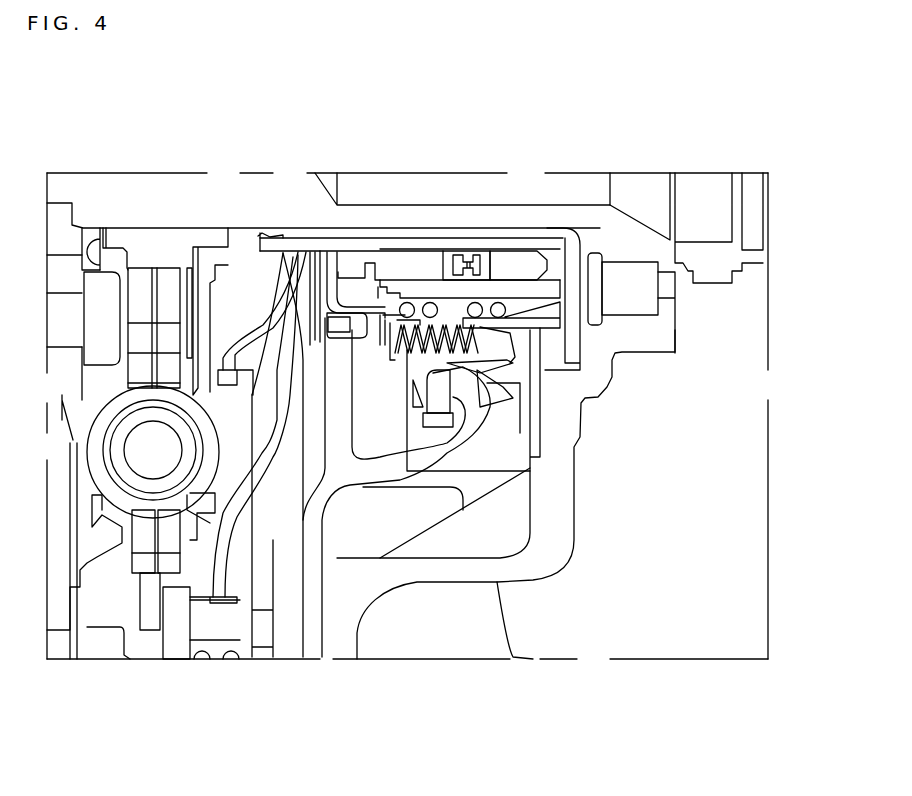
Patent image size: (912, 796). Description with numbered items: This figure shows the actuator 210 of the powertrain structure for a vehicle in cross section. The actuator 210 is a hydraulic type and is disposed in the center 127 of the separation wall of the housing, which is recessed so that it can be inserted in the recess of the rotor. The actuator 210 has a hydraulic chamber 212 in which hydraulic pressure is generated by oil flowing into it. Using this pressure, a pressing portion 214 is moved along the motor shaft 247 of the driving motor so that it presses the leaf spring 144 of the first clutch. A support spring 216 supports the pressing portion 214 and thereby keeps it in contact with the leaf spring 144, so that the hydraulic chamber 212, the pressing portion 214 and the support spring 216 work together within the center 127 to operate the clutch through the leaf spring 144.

The motor shaft 247 is at (158, 198).
The pressing portion 214 is at (320, 270).
The support spring 216 is at (475, 302).
The hydraulic chamber 212 is at (519, 267).
The actuator 210 is at (555, 337).
The leaf spring 144 is at (257, 540).
The center 127 is at (550, 497).